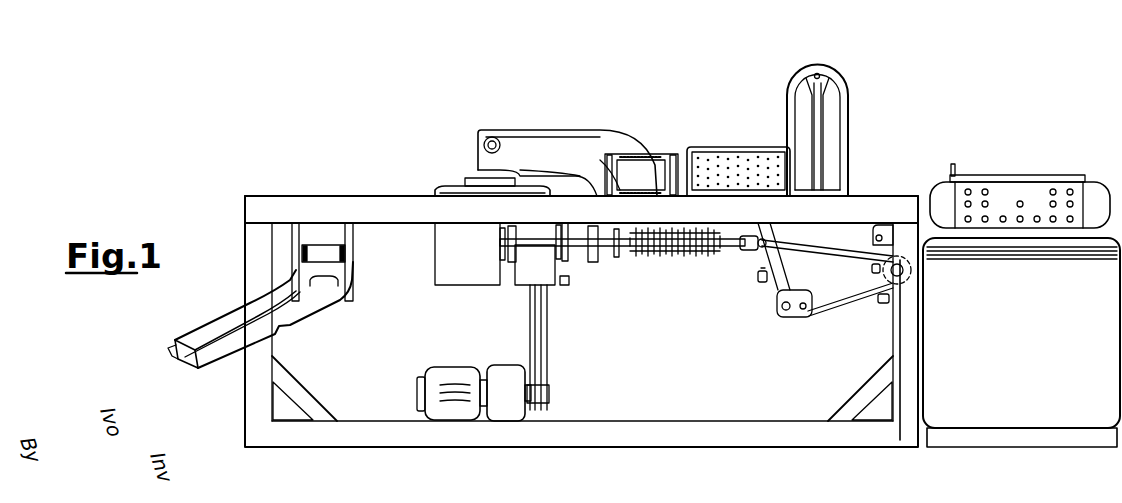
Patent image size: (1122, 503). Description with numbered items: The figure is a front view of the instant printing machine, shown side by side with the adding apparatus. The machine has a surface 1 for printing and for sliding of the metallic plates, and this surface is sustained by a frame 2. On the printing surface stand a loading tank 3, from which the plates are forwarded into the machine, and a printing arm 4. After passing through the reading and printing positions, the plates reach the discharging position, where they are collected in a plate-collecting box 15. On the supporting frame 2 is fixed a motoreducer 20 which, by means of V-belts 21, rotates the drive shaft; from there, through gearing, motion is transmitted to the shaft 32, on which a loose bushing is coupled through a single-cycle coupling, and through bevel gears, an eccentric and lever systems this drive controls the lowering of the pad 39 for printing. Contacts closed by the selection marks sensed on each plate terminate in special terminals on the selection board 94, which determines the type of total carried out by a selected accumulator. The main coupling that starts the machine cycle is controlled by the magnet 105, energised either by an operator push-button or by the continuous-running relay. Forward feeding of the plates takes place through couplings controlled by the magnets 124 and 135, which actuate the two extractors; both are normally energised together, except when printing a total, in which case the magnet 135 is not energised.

The surface 1 is at (275, 210).
The frame 2 is at (255, 259).
The loading tank 3 is at (848, 104).
The printing arm 4 is at (596, 149).
The plate-collecting box 15 is at (200, 331).
The motoreducer 20 is at (445, 376).
The V-belts 21 is at (543, 348).
The shaft 32 is at (824, 252).
The pad 39 is at (462, 180).
The selection board 94 is at (692, 152).
The magnet 105 is at (569, 283).
The magnet 124 is at (760, 282).
The magnet 135 is at (880, 302).